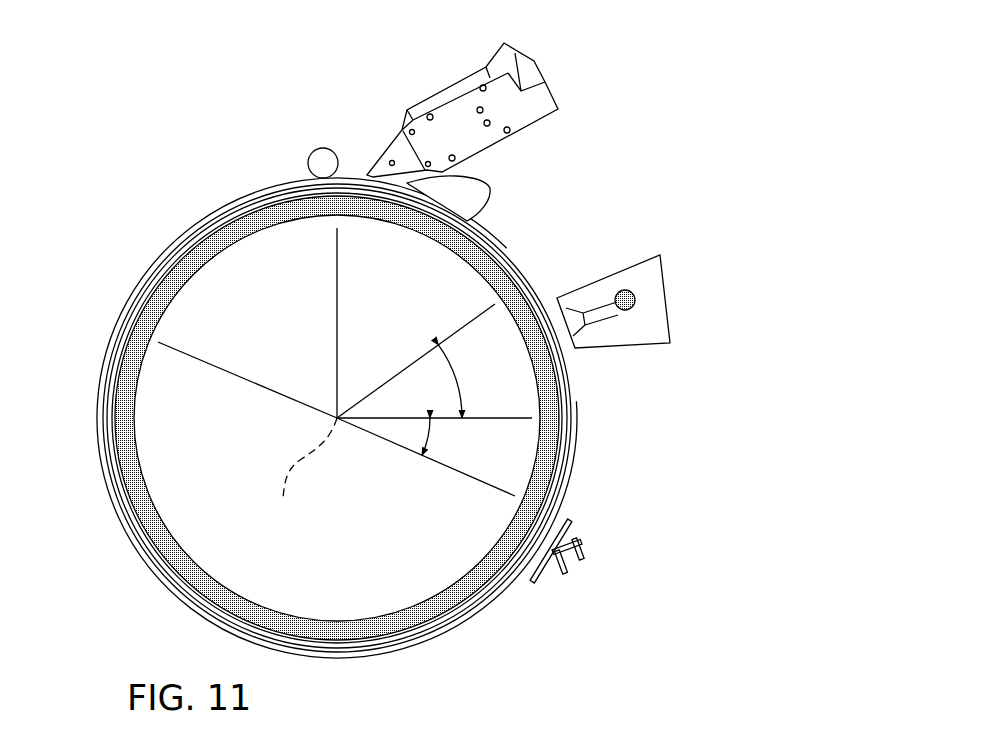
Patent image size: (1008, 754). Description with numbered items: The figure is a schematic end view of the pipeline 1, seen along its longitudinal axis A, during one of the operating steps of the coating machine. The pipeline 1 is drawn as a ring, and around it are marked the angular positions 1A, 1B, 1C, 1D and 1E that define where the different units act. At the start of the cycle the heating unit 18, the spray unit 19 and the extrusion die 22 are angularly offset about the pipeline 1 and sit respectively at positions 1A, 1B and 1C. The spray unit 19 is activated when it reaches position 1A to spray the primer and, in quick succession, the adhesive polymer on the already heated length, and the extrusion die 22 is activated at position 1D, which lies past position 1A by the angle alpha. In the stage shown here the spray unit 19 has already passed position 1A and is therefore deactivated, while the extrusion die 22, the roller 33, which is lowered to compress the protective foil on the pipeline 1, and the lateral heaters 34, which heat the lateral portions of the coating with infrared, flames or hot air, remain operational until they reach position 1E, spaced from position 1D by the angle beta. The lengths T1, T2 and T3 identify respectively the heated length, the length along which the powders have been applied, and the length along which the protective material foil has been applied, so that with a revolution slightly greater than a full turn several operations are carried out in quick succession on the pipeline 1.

The pipeline 1 is at (98, 553).
The position 1A is at (422, 361).
The position 1B is at (359, 323).
The position 1C is at (247, 363).
The position 1D is at (434, 437).
The position 1E is at (426, 471).
The longitudinal axis A is at (304, 474).
The heated length T1 is at (525, 282).
The length along which the powders have been applied T2 is at (497, 243).
The length along which the protective material foil is applied T3 is at (217, 210).
The heating unit 18 is at (540, 575).
The spray unit 19 is at (623, 342).
The extrusion die 22 is at (450, 110).
The roller 33 is at (318, 152).
The lateral heaters 34 is at (478, 184).